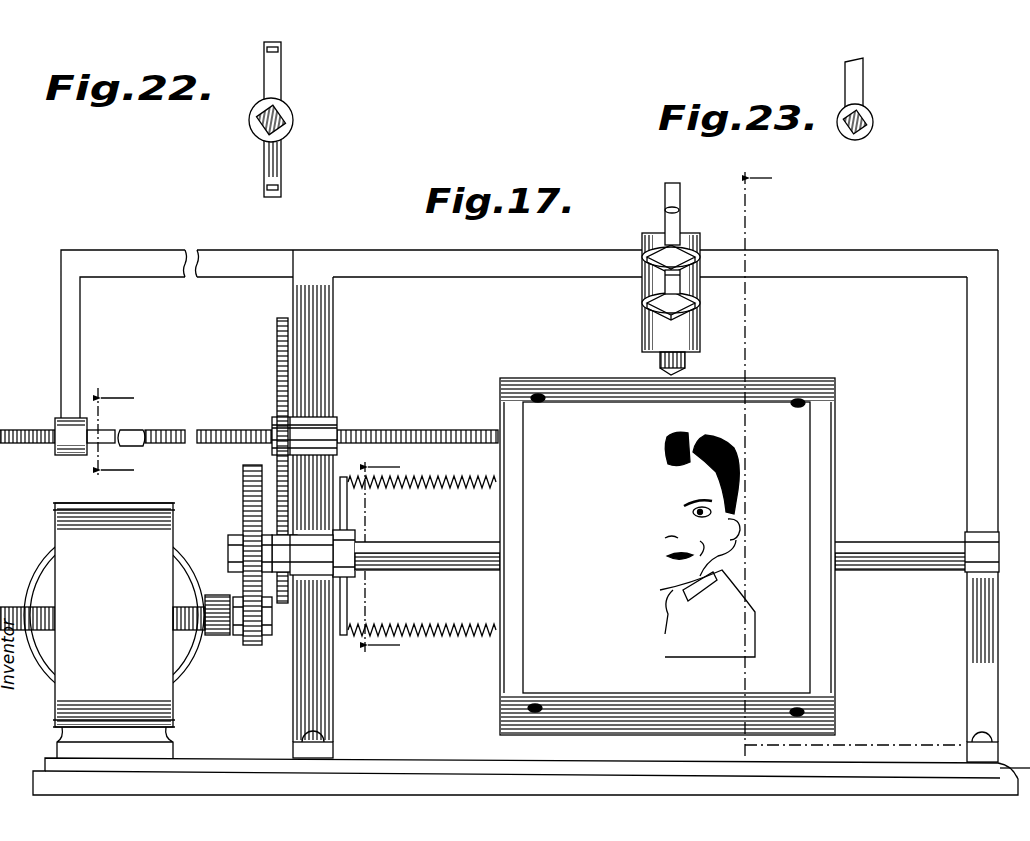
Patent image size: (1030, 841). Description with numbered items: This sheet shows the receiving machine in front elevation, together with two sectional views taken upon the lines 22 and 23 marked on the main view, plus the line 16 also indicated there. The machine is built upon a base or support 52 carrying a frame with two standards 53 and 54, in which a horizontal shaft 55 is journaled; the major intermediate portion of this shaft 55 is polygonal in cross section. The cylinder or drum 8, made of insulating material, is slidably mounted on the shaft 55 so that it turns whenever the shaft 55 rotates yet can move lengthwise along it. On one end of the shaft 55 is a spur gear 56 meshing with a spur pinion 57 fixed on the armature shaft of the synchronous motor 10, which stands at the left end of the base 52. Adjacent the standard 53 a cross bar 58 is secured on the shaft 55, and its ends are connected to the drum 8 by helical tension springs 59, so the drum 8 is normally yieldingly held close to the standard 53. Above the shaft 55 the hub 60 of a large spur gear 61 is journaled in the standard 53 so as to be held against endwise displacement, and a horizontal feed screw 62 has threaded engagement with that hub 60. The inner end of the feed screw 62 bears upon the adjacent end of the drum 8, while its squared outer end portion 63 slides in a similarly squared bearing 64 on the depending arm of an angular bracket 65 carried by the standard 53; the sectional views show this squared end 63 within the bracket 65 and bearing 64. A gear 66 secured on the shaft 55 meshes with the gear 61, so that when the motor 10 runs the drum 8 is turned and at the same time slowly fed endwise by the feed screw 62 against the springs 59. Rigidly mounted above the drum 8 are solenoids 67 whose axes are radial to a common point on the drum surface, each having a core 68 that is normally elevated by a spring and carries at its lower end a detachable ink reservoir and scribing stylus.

In FIG. 17, the cylinder 8 is at (836, 692).
In FIG. 17, the synchronous motor 10 is at (115, 630).
In FIG. 17, the section line 16 is at (887, 466).
In FIG. 17, the section line 22— 22 is at (405, 557).
In FIG. 17, the section line 23— 23 is at (133, 434).
In FIG. 17, the base 52 is at (455, 760).
In FIG. 17, the standard 53 is at (288, 690).
In FIG. 17, the standard 54 is at (987, 711).
In FIG. 22, the horizontal shaft 55 is at (250, 119).
In FIG. 17, the horizontal shaft 55 is at (879, 542).
In FIG. 17, the spur gear 56 is at (243, 484).
In FIG. 17, the spur pinion 57 is at (250, 648).
In FIG. 22, the cross bar 58 is at (277, 159).
In FIG. 17, the cross bar 58 is at (349, 600).
In FIG. 17, the helical tension springs 59 is at (430, 490).
In FIG. 17, the hub 60 is at (336, 418).
In FIG. 17, the large spur gear 61 is at (277, 340).
In FIG. 17, the feed screw 62 is at (232, 429).
In FIG. 23, the squared outer end portion 63 is at (850, 140).
In FIG. 17, the squared outer end portion 63 is at (45, 428).
In FIG. 17, the bearing 64 is at (62, 456).
In FIG. 23, the angular bracket 65 is at (865, 88).
In FIG. 17, the angular bracket 65 is at (166, 278).
In FIG. 17, the gear 66 is at (283, 606).
In FIG. 17, the solenoids 67 is at (643, 336).
In FIG. 17, the cores 68 is at (665, 199).